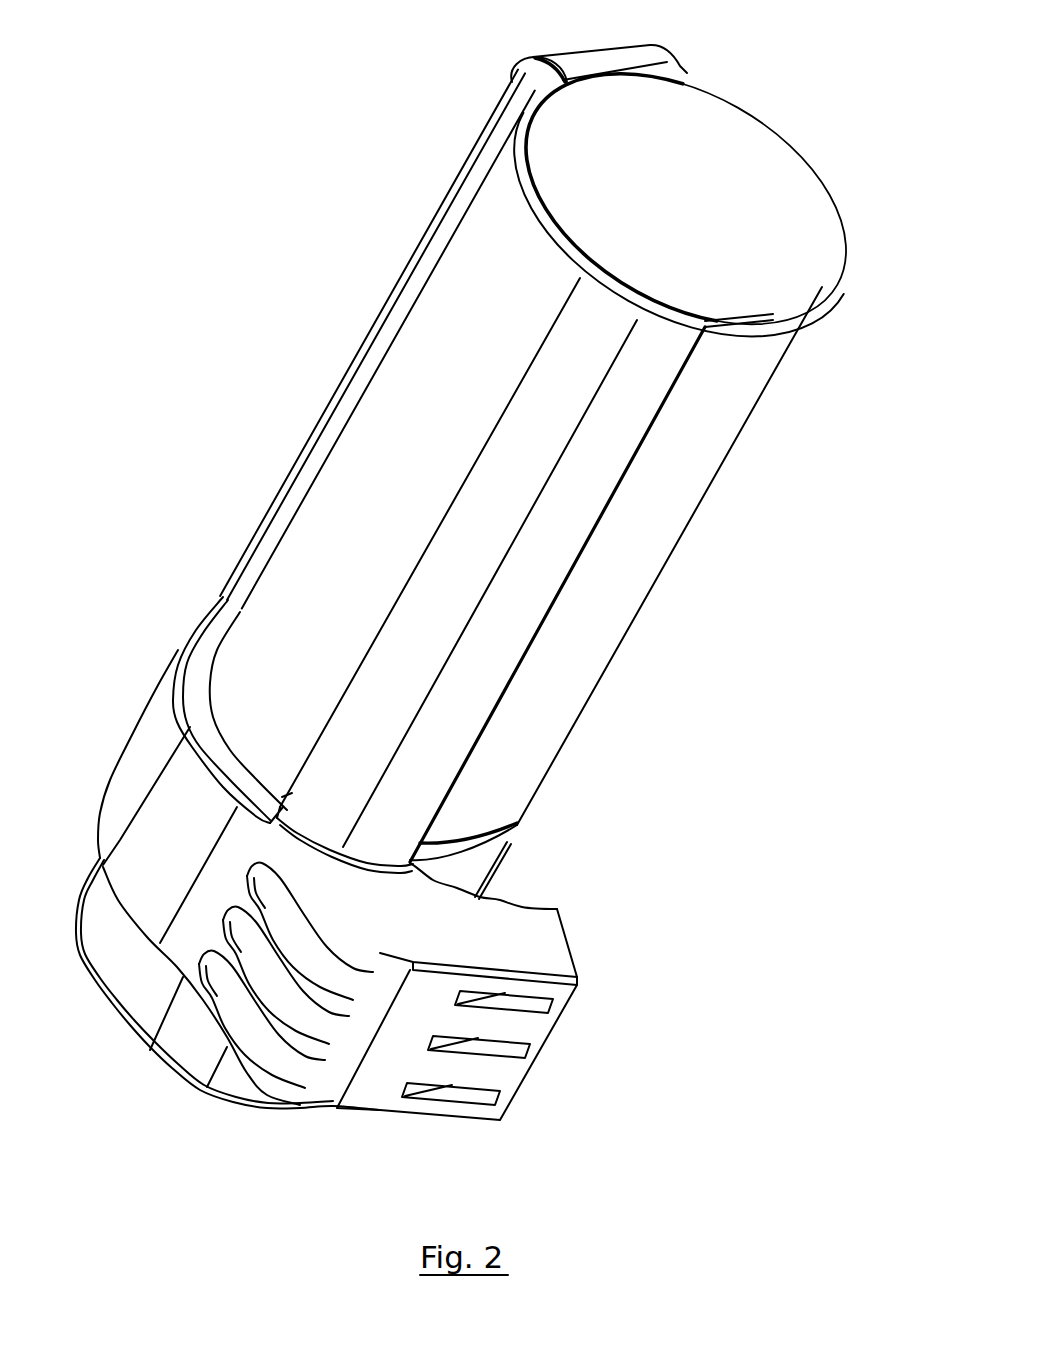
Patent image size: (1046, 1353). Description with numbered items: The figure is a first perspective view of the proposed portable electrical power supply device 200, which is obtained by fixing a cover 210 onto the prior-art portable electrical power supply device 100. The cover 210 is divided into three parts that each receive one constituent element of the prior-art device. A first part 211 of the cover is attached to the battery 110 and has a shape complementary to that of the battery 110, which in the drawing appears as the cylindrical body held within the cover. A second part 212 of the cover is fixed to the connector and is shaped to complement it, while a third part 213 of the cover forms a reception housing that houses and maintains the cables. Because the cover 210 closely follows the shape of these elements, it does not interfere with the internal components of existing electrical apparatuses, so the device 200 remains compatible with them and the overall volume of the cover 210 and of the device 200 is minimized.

The portable electrical power supply device 200 is at (491, 613).
The prior-art portable electrical power supply device 100 is at (663, 460).
The battery 110 is at (582, 662).
The cover 210 is at (460, 624).
The first part of the cover 211 is at (492, 512).
The second part of the cover 212 is at (397, 1063).
The third part of the cover 213 is at (428, 223).